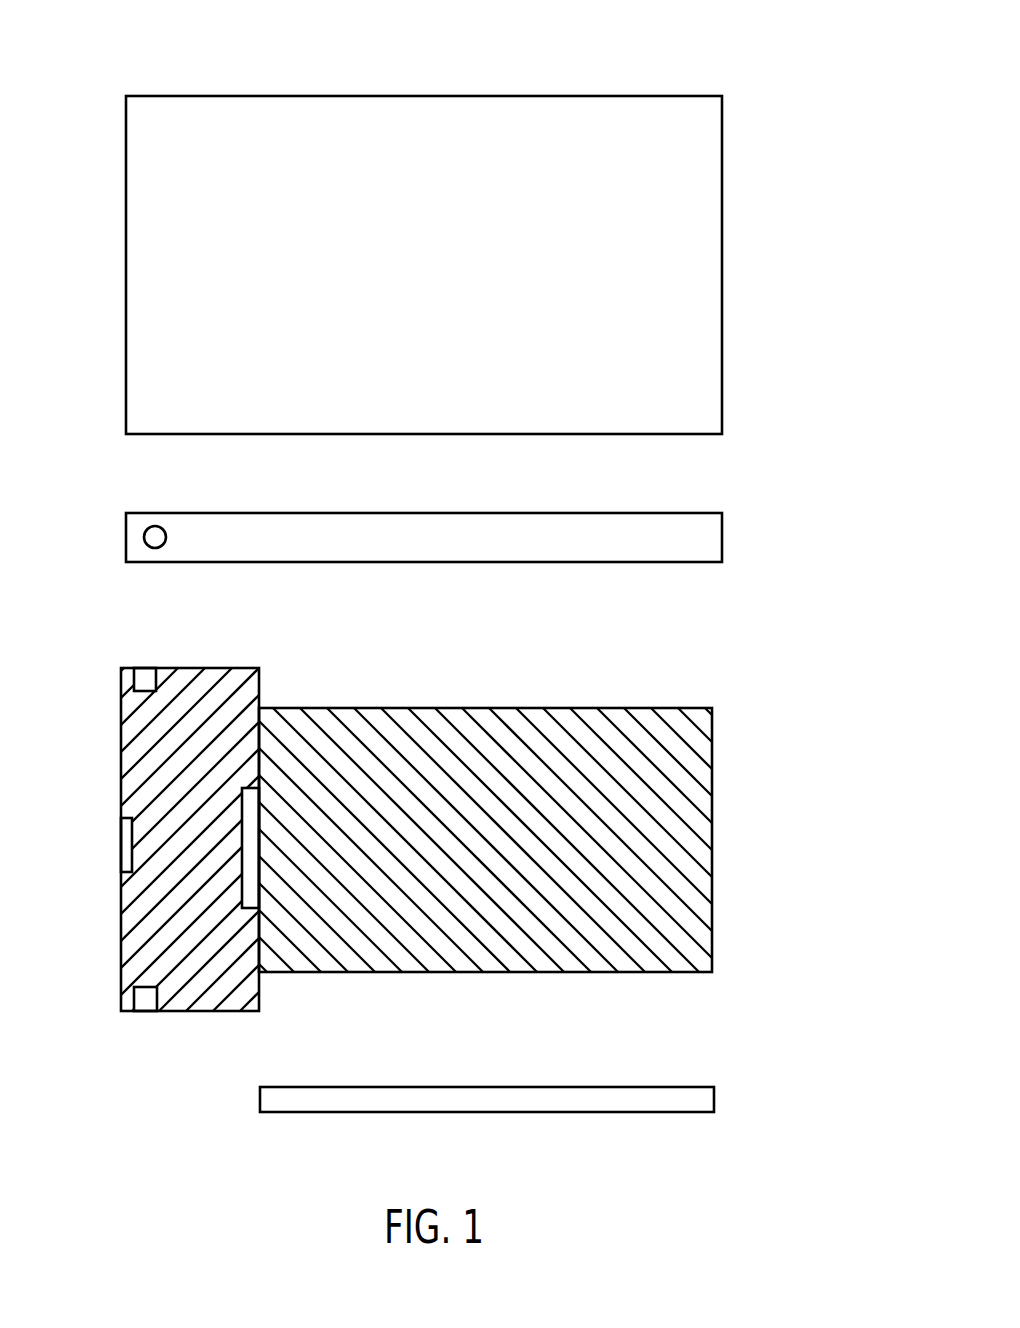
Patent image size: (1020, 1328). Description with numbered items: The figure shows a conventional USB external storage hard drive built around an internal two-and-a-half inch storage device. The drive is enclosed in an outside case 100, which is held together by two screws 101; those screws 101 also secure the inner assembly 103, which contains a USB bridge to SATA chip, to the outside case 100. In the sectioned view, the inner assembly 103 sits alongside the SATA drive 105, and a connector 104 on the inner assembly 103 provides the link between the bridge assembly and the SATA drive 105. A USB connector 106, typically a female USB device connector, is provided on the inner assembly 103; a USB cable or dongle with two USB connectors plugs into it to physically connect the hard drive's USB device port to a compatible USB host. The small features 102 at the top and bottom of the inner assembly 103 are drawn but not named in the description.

The outside case 100 is at (124, 70).
The screws 101 is at (145, 535).
The notch 102 is at (145, 673).
The inner assembly 103 is at (128, 708).
The connector 104 is at (243, 803).
The SATA drive 105 is at (350, 716).
The USB connector 106 is at (127, 845).